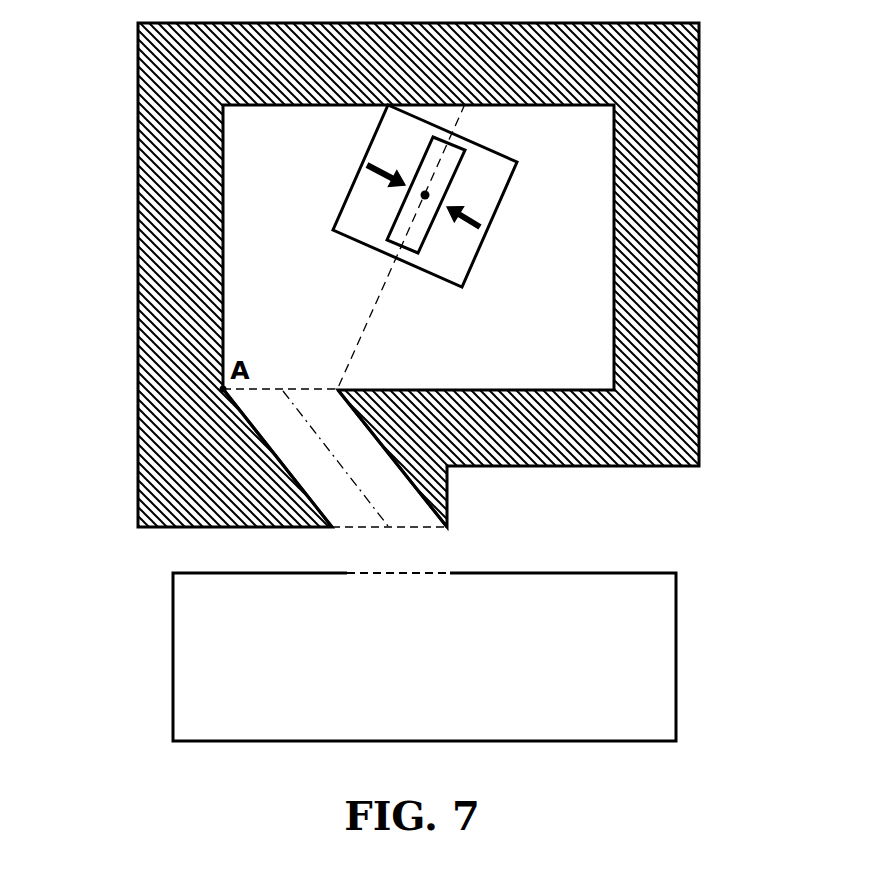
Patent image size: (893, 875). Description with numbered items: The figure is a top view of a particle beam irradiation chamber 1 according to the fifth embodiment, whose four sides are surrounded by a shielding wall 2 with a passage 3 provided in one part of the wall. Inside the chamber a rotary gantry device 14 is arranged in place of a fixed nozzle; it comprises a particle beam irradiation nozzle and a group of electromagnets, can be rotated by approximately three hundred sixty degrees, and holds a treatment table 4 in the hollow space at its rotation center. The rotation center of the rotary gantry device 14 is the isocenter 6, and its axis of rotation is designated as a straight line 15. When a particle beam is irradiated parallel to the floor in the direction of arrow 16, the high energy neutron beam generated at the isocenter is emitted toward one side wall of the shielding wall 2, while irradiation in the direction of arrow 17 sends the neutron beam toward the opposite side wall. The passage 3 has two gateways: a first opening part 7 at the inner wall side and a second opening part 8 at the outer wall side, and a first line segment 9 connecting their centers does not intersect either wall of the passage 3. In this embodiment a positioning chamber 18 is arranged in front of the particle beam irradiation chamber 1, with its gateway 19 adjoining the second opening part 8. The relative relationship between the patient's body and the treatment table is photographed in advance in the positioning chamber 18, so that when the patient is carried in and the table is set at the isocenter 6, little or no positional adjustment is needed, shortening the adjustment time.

The particle beam irradiation chamber 1 is at (414, 275).
The shielding wall 2 is at (138, 131).
The passage 3 is at (345, 437).
The treatment table 4 is at (482, 130).
The isocenter 6 is at (428, 200).
The first opening part 7 is at (268, 387).
The second opening part 8 is at (381, 518).
The first line segment 9 is at (305, 413).
The rotary gantry device 14 is at (490, 172).
The straight line 15 is at (368, 313).
The arrow 16 is at (497, 225).
The arrow 17 is at (370, 163).
The positioning chamber 18 is at (185, 638).
The gateway 19 is at (395, 578).